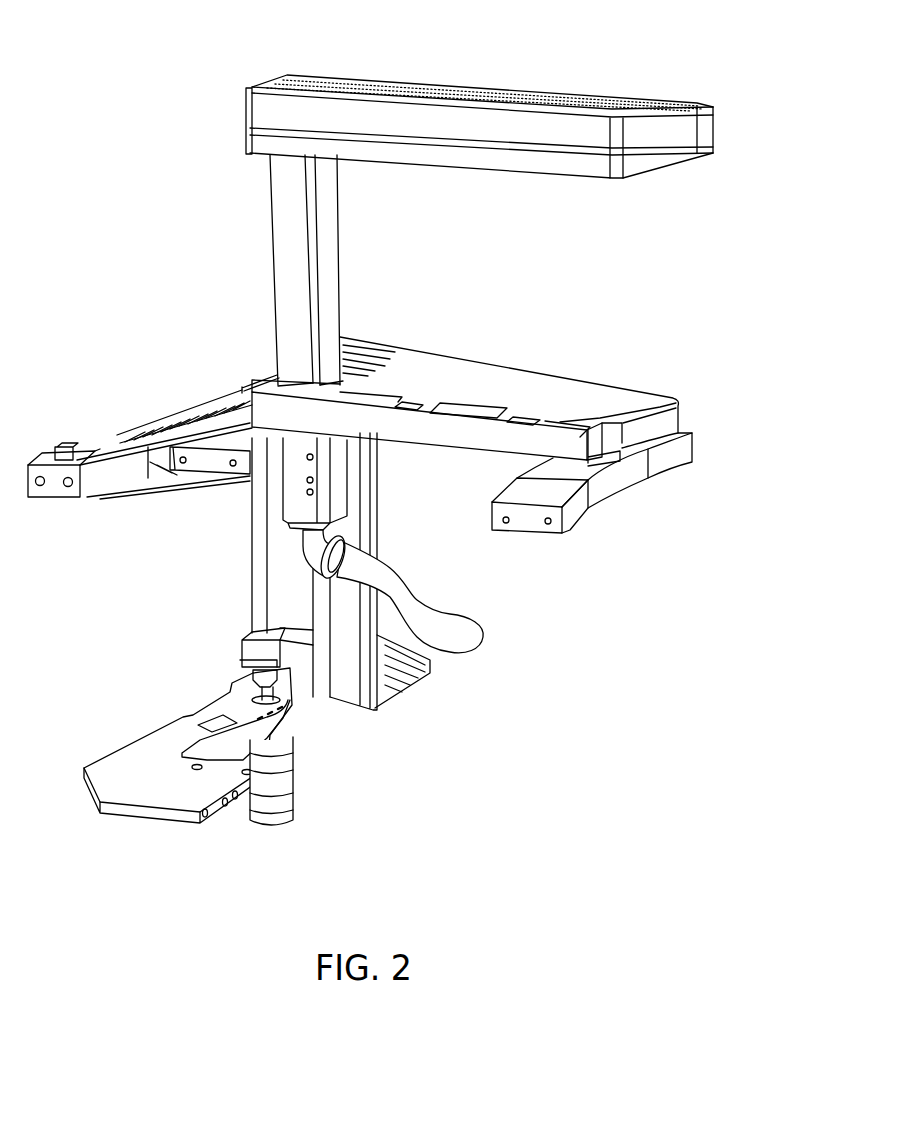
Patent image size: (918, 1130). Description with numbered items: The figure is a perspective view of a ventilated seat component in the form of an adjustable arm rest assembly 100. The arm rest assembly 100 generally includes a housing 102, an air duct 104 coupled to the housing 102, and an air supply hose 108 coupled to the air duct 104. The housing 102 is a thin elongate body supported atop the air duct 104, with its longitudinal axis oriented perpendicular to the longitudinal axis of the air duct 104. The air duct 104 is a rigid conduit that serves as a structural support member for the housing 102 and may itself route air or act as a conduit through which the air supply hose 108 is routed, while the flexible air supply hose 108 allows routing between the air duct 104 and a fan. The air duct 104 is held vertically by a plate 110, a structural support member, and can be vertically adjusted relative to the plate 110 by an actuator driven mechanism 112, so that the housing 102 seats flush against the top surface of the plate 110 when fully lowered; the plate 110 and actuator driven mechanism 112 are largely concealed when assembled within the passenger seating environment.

The arm rest assembly 100 is at (632, 63).
The housing 102 is at (713, 133).
The air duct 104 is at (338, 293).
The air supply hose 108 is at (450, 610).
The plate 110 is at (593, 380).
The actuator driven mechanism 112 is at (213, 681).